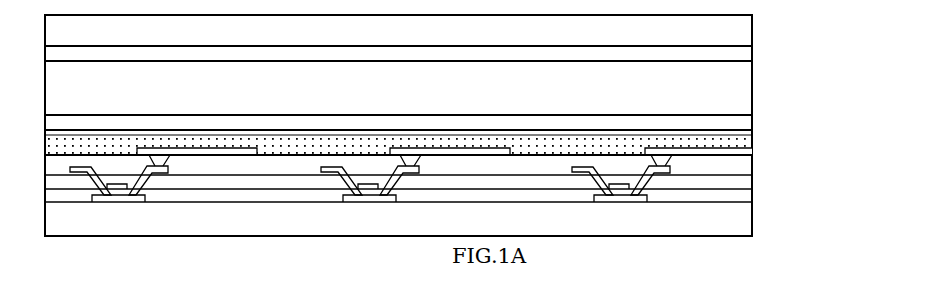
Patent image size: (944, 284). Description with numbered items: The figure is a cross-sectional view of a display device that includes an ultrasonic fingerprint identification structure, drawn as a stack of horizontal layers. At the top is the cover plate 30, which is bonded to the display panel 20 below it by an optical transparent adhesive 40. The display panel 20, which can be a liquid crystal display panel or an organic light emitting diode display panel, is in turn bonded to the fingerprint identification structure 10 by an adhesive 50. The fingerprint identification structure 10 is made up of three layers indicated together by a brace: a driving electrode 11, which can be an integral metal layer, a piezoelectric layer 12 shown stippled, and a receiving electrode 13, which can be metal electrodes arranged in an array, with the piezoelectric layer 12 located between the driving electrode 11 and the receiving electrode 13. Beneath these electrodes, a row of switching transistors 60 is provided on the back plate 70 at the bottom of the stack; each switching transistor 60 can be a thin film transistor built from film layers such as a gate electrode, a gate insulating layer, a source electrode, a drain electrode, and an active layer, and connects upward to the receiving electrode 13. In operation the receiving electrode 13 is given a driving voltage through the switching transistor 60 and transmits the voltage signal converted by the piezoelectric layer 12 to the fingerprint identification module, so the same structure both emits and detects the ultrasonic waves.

The fingerprint identification structure 10 is at (822, 113).
The driving electrode 11 is at (733, 130).
The piezoelectric layer 12 is at (733, 142).
The receiving electrode 13 is at (732, 153).
The display panel 20 is at (733, 92).
The cover plate 30 is at (733, 35).
The optical transparent adhesive 40 is at (733, 53).
The adhesive 50 is at (733, 118).
The switching transistor 60 is at (754, 155).
The back plate 70 is at (728, 223).